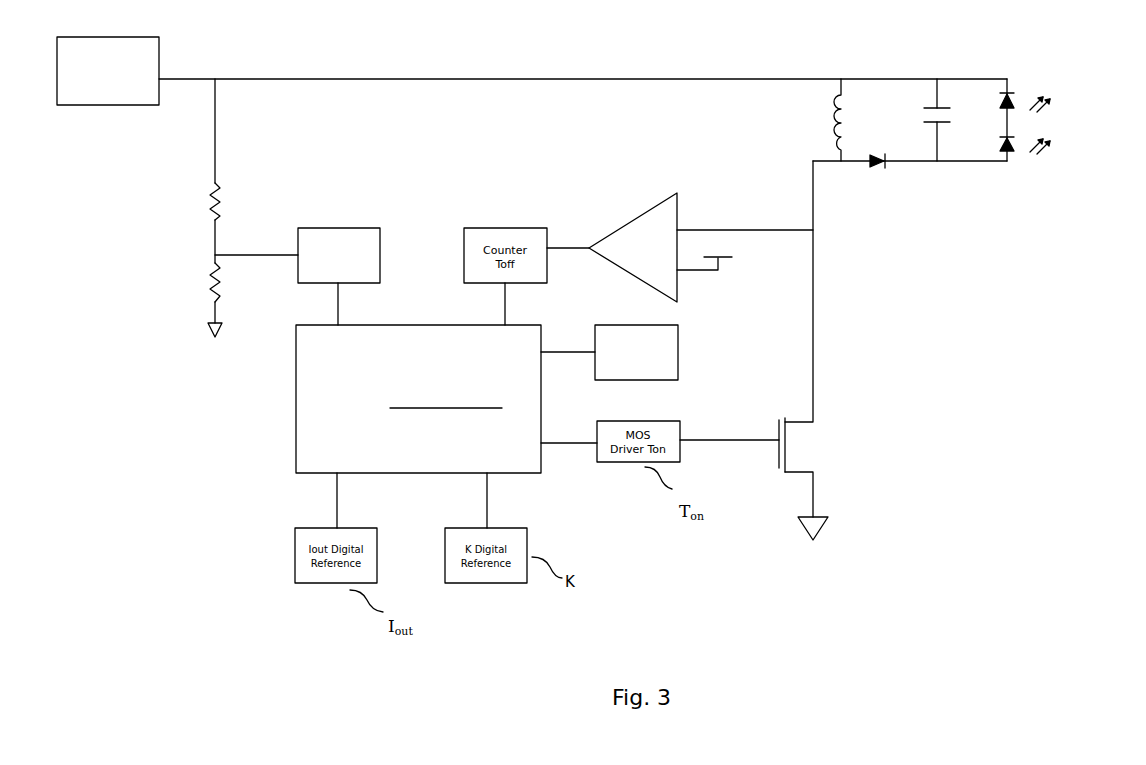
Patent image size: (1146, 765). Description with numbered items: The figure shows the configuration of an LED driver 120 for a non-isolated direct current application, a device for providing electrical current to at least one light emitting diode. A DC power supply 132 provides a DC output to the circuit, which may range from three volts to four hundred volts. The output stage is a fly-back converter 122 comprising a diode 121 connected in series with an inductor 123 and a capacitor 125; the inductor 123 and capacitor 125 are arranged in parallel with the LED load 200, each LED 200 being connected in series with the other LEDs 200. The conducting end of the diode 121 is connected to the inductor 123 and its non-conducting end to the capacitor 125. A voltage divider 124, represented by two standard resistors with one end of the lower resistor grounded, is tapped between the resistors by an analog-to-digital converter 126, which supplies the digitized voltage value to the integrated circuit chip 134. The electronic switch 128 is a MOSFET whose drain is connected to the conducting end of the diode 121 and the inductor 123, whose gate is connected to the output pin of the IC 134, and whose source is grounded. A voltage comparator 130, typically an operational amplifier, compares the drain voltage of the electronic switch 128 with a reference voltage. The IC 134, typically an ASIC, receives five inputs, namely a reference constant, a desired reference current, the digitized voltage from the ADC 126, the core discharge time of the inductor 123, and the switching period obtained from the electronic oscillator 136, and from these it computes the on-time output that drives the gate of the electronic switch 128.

The LED driver 120 is at (942, 347).
The diode 121 is at (878, 171).
The fly-back converter 122 is at (910, 166).
The inductor 123 is at (858, 108).
The voltage divider 124 is at (205, 253).
The capacitor 125 is at (948, 121).
The analog-to-digital converter 126 is at (342, 226).
The electronic switch 128 is at (815, 443).
The voltage comparator 130 is at (681, 290).
The DC power supply 132 is at (133, 113).
The integrated circuit chip 134 is at (293, 421).
The electronic oscillator 136 is at (683, 352).
The LED load 200 is at (1067, 88).